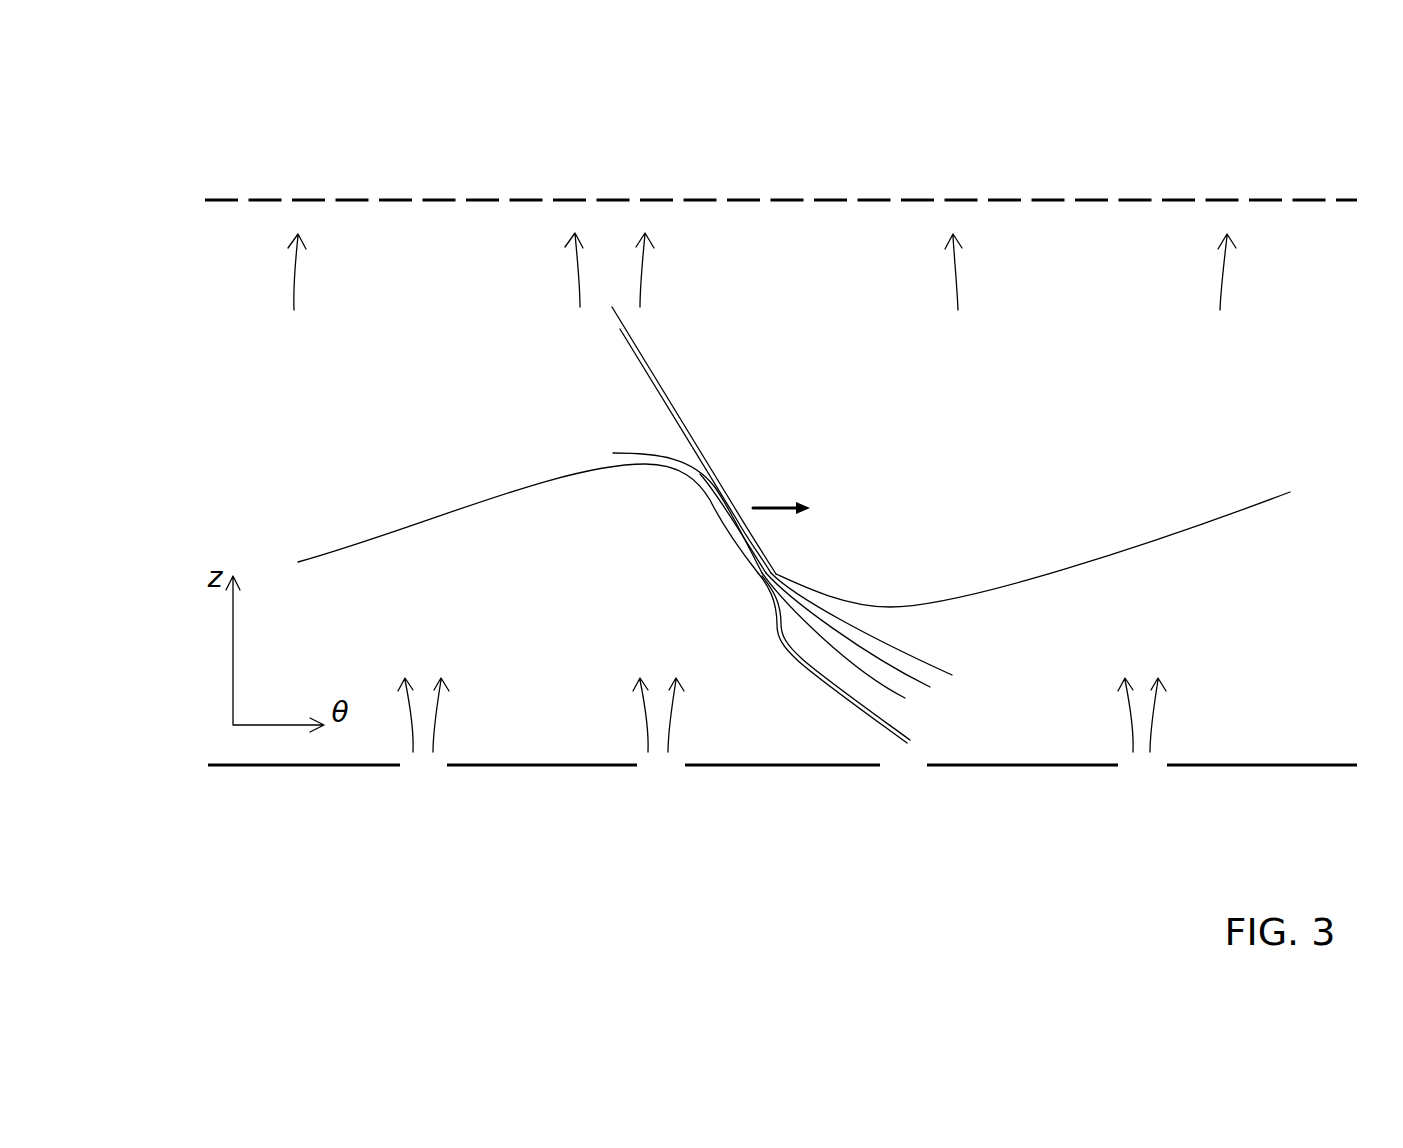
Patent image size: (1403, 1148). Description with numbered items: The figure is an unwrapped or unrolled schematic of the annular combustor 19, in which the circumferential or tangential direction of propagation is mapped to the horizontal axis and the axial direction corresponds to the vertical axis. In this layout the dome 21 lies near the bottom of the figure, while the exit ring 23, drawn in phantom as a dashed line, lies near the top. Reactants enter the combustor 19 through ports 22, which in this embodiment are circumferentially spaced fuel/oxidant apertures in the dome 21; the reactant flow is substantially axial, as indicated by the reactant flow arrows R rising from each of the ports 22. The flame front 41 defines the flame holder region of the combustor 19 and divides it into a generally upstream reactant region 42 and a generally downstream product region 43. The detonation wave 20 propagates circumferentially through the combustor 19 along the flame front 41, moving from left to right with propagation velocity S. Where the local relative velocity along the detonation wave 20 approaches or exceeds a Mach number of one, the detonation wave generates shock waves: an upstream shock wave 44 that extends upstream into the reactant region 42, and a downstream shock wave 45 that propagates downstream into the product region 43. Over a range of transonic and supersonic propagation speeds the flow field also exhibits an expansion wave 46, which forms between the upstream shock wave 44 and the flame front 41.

The annular combustor 19 is at (1238, 102).
The detonation wave 20 is at (794, 525).
The dome 21 is at (282, 766).
The ports 22 is at (402, 782).
The exit ring 23 is at (292, 200).
The flame front 41 is at (364, 512).
The reactant region 42 is at (589, 610).
The product region 43 is at (512, 429).
The upstream shock wave 44 is at (795, 692).
The downstream shock wave 45 is at (688, 378).
The expansion wave 46 is at (957, 650).